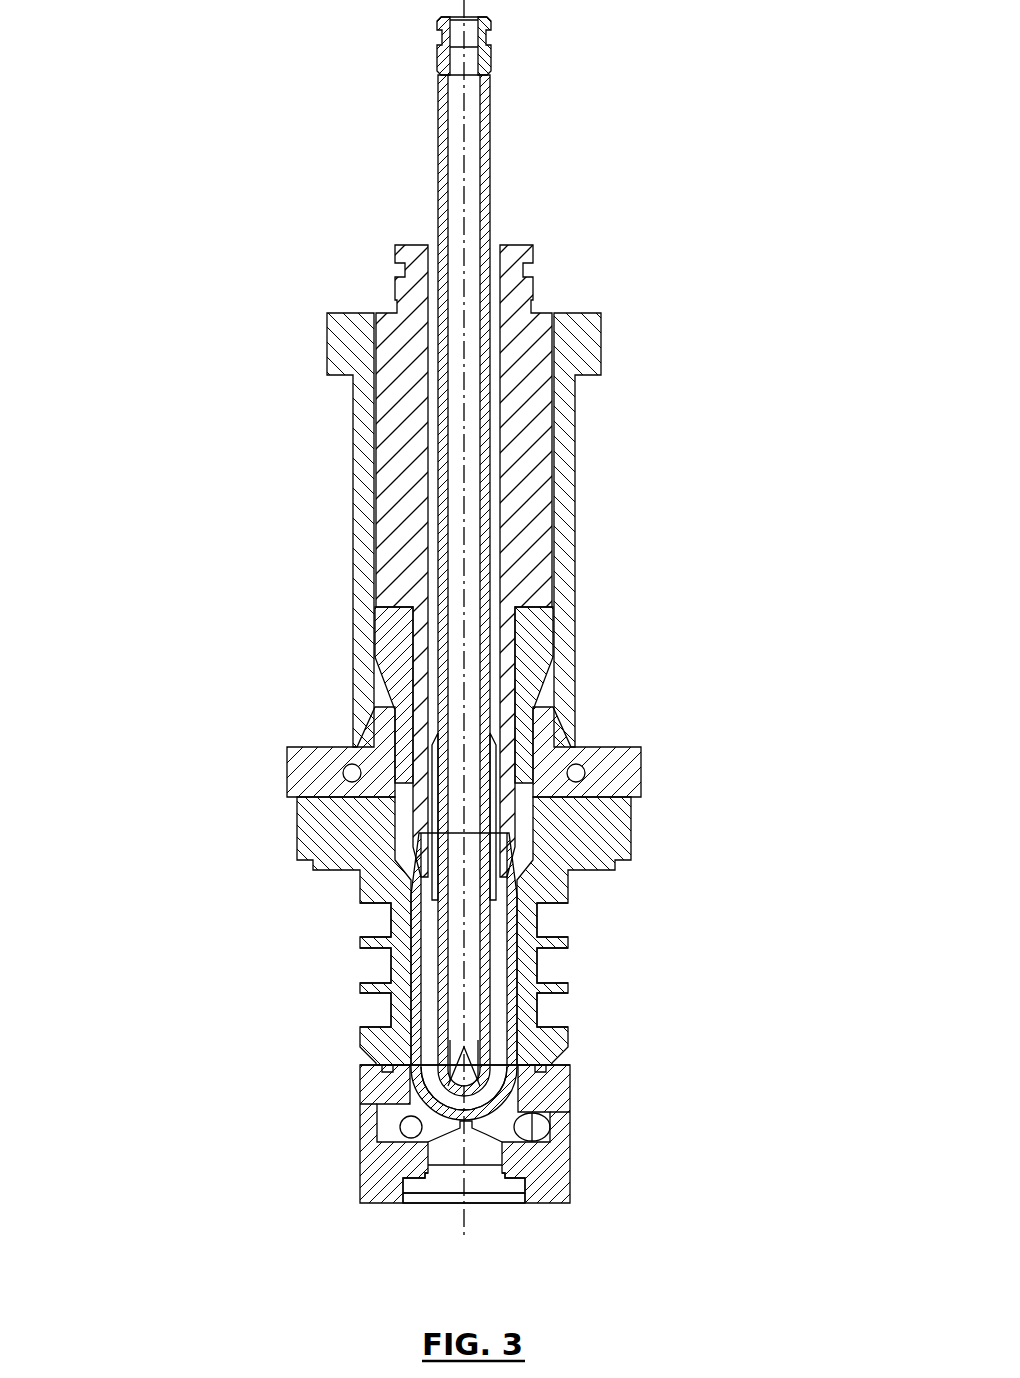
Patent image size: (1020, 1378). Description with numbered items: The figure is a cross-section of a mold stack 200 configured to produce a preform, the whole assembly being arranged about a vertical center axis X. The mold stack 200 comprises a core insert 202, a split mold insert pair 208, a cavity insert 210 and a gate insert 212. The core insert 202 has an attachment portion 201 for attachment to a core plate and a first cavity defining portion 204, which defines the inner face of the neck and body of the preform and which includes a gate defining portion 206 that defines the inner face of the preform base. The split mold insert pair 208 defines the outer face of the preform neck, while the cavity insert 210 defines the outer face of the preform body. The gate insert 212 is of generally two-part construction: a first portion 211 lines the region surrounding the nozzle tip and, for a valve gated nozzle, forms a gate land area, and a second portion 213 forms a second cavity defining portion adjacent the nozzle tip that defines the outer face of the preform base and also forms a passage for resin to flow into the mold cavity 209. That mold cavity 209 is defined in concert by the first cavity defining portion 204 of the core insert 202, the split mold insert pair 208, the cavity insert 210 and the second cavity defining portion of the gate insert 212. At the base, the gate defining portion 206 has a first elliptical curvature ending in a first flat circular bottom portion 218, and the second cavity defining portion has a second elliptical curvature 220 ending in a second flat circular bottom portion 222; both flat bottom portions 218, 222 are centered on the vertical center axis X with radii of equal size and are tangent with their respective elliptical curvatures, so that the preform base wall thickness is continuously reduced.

The mold stack 200 is at (710, 175).
The attachment portion 201 is at (565, 288).
The core insert 202 is at (682, 345).
The first cavity defining portion 204 is at (213, 983).
The gate defining portion 206 is at (422, 1082).
The split mold insert pair 208 is at (674, 769).
The mold cavity 209 is at (420, 922).
The cavity insert 210 is at (578, 976).
The first portion 211 is at (572, 1190).
The gate insert 212 is at (674, 1110).
The second portion 213 is at (572, 1080).
The first flat circular bottom portion 218 is at (455, 1217).
The second elliptical curvature 220 is at (418, 1102).
The second flat circular bottom portion 222 is at (458, 1126).
The vertical center axis X is at (465, 638).